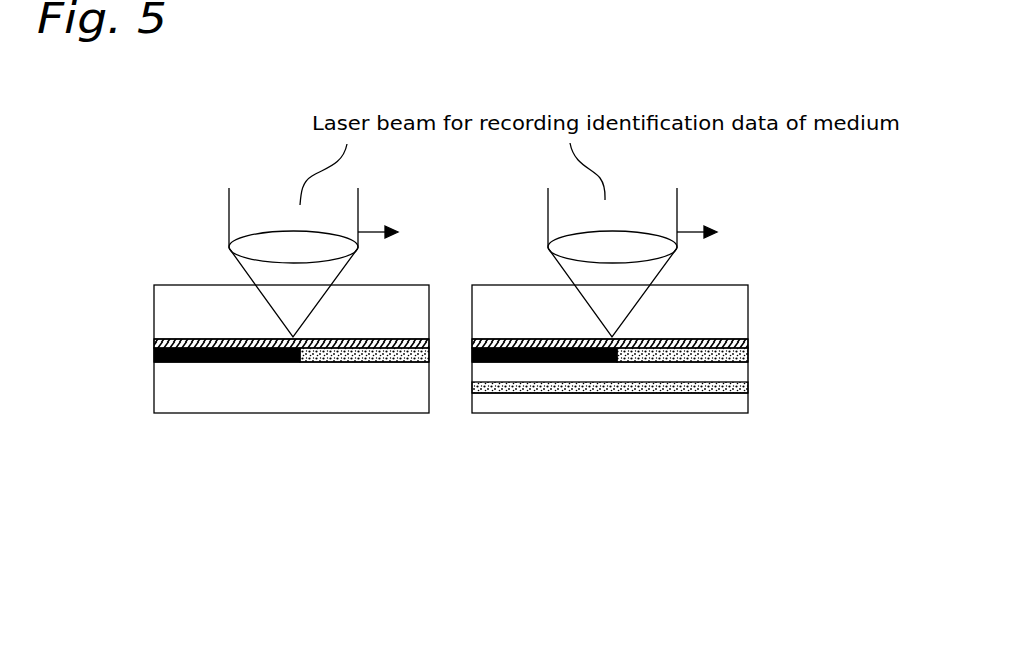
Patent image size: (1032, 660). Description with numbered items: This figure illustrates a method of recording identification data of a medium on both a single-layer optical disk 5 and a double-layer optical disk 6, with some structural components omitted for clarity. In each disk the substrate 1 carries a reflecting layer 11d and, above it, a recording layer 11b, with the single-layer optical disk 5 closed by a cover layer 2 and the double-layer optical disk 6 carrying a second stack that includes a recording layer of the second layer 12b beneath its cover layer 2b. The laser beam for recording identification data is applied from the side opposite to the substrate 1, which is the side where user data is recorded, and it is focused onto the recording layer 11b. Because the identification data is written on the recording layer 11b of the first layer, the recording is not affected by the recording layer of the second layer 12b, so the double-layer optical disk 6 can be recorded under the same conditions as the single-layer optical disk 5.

The substrate 1 is at (451, 317).
The cover layer 2 is at (291, 387).
The cover layer 2b is at (510, 400).
The single-layer optical disk 5 is at (135, 285).
The double-layer optical disk 6 is at (763, 285).
The reflecting layer 11d is at (365, 338).
The recording layer 11b is at (343, 362).
The recording layer of the second layer 12b is at (663, 393).